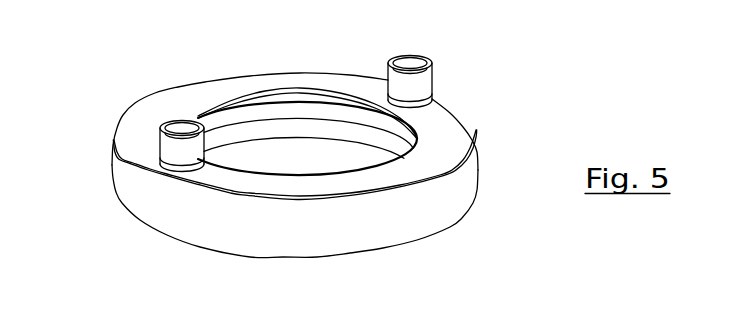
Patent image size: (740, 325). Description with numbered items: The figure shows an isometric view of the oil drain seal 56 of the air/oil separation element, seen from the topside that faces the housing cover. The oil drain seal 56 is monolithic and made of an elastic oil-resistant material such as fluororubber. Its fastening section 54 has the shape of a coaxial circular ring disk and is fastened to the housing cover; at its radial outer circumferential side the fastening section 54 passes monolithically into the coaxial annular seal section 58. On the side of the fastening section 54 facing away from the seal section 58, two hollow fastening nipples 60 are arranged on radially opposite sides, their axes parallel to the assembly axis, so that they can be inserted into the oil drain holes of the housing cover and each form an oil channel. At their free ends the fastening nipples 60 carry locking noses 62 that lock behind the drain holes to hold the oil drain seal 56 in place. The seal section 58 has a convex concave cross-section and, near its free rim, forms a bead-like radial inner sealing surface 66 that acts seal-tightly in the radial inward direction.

The fastening section 54 is at (163, 113).
The oil drain seal 56 is at (108, 72).
The seal section 58 is at (345, 224).
The fastening nipple 60 is at (417, 85).
The locking nose 62 is at (196, 121).
The radial inner sealing surface 66 is at (320, 133).